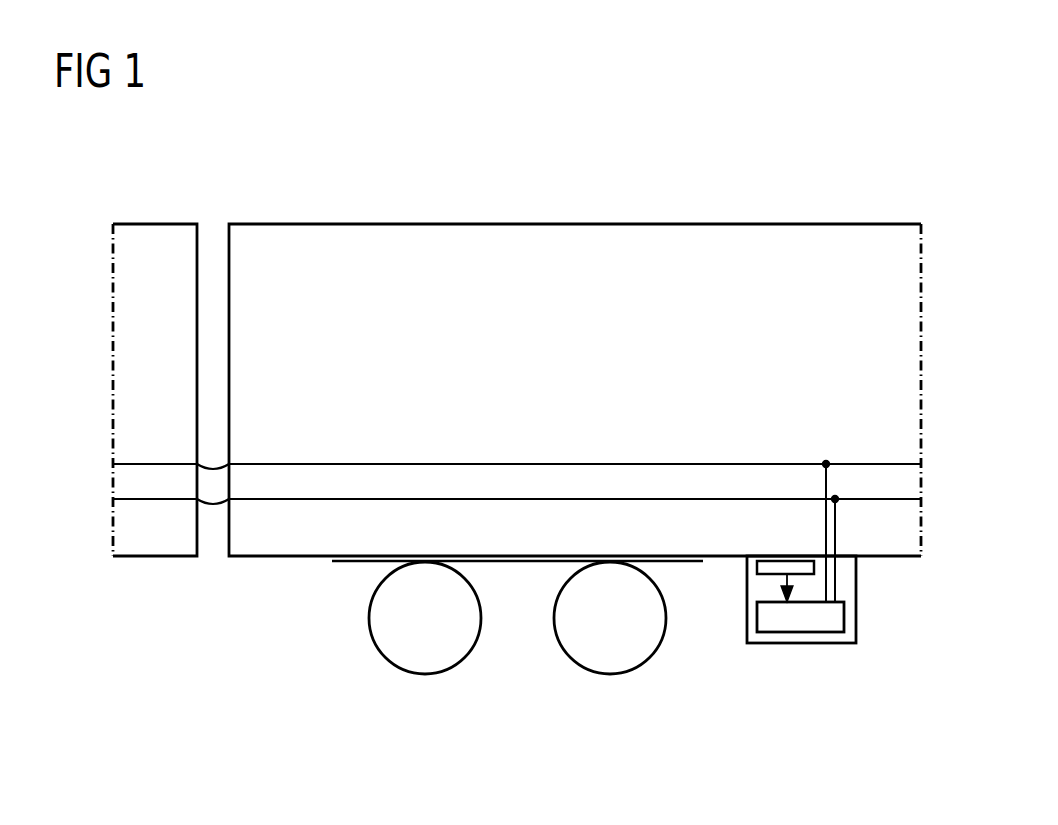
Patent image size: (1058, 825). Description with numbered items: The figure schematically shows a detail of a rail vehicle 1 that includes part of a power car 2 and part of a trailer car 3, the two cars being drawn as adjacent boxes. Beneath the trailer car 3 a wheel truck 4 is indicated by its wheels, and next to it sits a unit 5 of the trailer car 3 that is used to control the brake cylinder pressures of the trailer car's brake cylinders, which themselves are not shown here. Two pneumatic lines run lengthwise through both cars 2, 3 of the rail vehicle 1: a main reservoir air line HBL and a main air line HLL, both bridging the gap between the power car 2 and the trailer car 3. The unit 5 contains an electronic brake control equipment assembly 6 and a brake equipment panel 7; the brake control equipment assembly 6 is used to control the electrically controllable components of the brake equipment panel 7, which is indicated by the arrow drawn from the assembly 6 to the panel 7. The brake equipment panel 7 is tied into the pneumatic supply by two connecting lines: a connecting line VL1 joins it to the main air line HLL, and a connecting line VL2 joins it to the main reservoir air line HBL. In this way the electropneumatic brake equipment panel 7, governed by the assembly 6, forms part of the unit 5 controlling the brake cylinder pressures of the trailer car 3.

The rail vehicle 1 is at (763, 180).
The power car 2 is at (152, 224).
The trailer car 3 is at (549, 224).
The wheel truck 4 is at (349, 564).
The unit 5 is at (847, 643).
The electronic brake control equipment assembly 6 is at (747, 567).
The brake equipment panel 7 is at (800, 632).
The main reservoir air line HBL is at (591, 463).
The main air line HLL is at (668, 499).
The connecting line VL1 is at (826, 464).
The connecting line VL2 is at (835, 530).